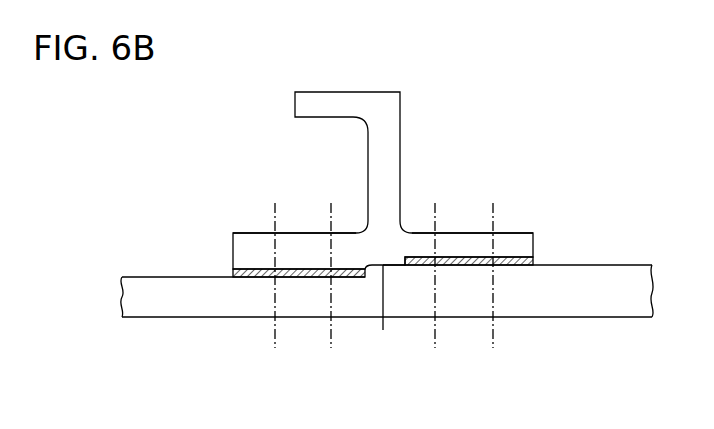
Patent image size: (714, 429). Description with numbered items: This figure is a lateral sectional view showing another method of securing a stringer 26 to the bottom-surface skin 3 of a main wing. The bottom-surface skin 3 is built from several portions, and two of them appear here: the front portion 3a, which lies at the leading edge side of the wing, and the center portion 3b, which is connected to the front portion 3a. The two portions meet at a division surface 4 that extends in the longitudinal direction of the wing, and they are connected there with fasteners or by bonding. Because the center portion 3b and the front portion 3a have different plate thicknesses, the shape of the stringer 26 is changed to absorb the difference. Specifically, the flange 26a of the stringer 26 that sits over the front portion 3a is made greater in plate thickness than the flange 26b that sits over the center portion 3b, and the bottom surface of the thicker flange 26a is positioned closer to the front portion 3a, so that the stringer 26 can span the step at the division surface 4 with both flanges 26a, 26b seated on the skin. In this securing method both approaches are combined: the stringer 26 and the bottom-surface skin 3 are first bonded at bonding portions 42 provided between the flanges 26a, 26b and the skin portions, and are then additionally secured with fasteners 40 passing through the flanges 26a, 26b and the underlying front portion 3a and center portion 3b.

The bottom-surface skin 3 is at (145, 321).
The front portion 3a is at (225, 318).
The center portion 3b is at (537, 318).
The division surface 4 is at (383, 330).
The stringer 26 is at (395, 120).
The flange 26a is at (248, 242).
The flange 26b is at (465, 233).
The fastener 40 is at (330, 212).
The bonding portion 42 is at (232, 270).